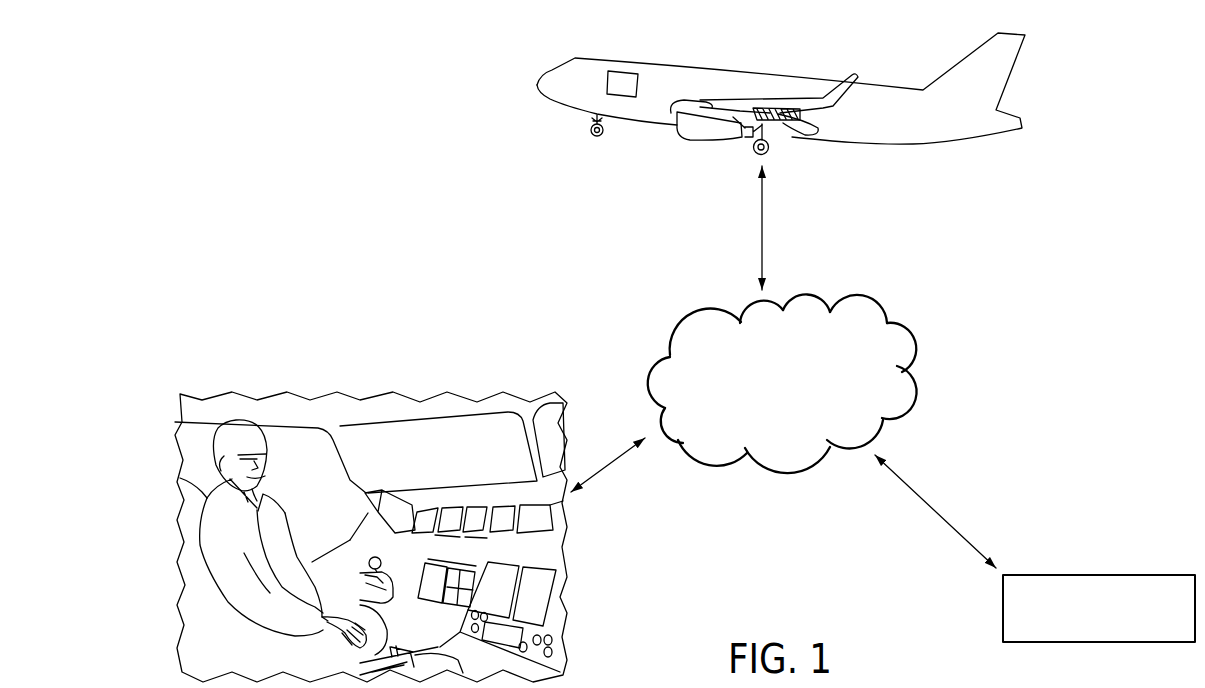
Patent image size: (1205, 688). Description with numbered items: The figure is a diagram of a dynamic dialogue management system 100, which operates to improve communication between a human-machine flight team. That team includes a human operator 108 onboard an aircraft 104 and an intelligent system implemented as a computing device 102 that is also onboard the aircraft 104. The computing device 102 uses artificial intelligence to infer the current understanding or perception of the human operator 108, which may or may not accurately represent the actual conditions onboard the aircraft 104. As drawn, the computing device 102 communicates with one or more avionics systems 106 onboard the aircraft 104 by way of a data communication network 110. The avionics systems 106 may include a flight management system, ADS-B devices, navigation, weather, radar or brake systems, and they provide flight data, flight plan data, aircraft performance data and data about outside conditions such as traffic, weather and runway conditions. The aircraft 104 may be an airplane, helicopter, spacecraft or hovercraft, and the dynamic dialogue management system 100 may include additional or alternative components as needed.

The dynamic dialogue management system 100 is at (306, 143).
The computing device 102 is at (1100, 575).
The aircraft 104 is at (1022, 40).
The avionics systems 106 is at (620, 70).
The human operator 108 is at (273, 392).
The data communication network 110 is at (807, 298).